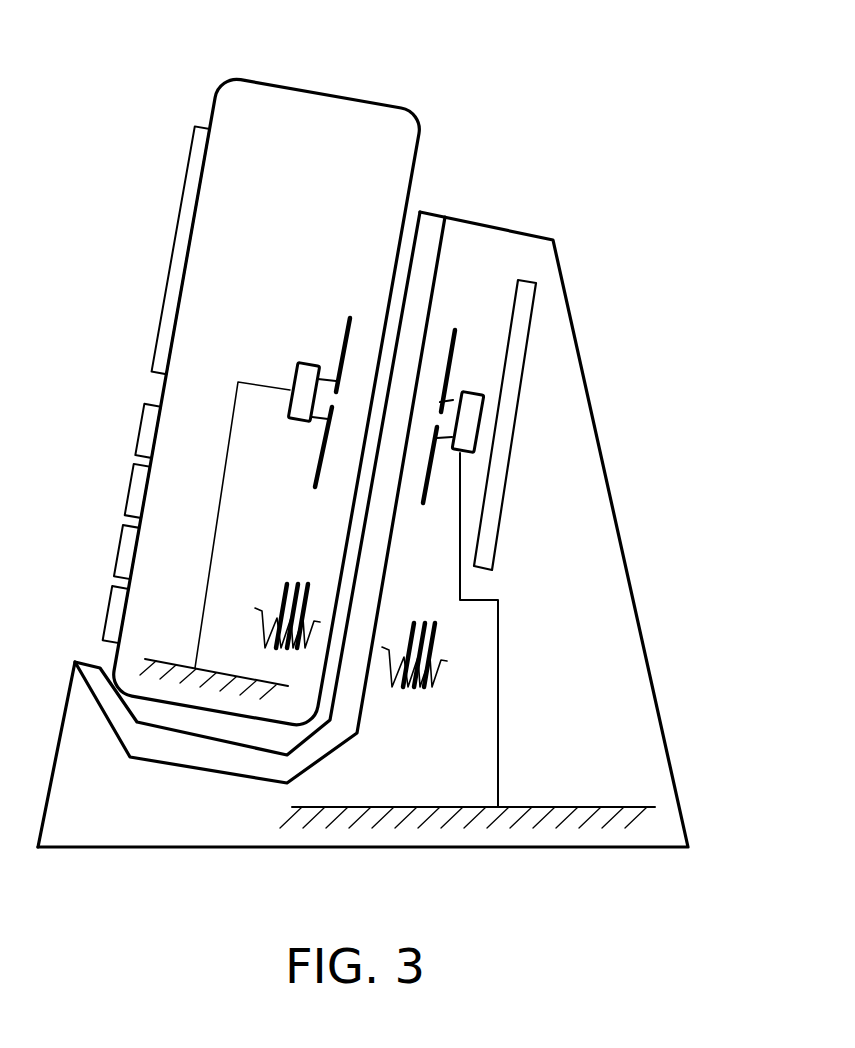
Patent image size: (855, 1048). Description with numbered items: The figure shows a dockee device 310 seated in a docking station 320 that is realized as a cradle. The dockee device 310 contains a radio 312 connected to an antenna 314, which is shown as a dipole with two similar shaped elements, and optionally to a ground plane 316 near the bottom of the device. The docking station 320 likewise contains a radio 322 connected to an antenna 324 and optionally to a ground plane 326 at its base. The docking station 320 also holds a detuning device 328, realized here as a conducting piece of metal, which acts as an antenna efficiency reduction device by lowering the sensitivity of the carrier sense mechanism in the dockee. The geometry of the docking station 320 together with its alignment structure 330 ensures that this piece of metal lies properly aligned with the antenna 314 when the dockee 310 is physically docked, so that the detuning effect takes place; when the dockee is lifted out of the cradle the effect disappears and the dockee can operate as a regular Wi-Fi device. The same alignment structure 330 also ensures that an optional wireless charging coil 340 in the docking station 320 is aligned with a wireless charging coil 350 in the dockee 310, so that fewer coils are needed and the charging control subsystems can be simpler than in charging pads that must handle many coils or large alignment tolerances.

The dockee device 310 is at (232, 78).
The radio 312 is at (302, 360).
The antenna 314 is at (343, 318).
The ground plane 316 is at (178, 660).
The docking station 320 is at (553, 239).
The radio 322 is at (467, 392).
The antenna 324 is at (455, 328).
The ground plane 326 is at (618, 806).
The detuning device 328 is at (495, 562).
The alignment structure 330 is at (434, 211).
The wireless charging coil 340 is at (413, 688).
The wireless charging coil 350 is at (292, 582).